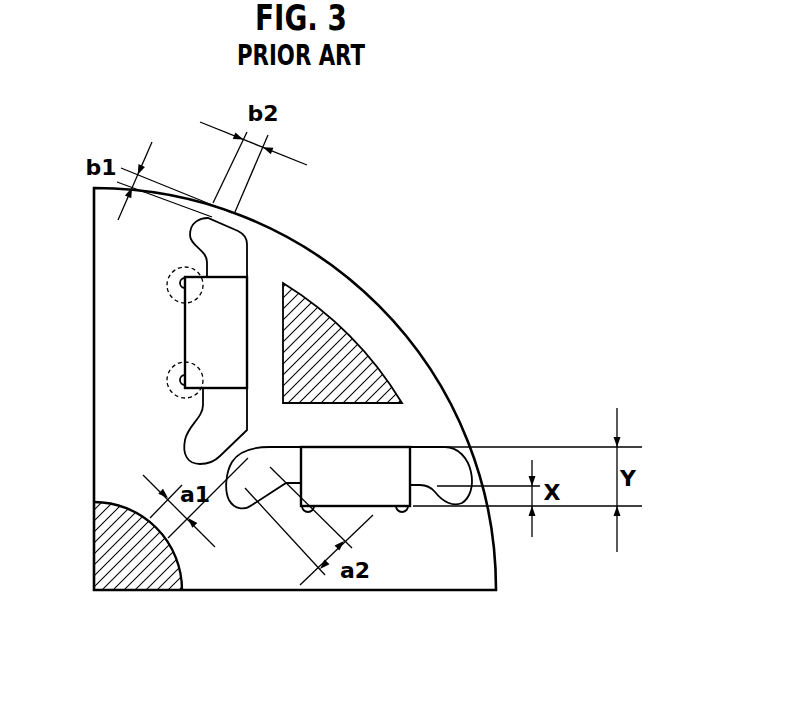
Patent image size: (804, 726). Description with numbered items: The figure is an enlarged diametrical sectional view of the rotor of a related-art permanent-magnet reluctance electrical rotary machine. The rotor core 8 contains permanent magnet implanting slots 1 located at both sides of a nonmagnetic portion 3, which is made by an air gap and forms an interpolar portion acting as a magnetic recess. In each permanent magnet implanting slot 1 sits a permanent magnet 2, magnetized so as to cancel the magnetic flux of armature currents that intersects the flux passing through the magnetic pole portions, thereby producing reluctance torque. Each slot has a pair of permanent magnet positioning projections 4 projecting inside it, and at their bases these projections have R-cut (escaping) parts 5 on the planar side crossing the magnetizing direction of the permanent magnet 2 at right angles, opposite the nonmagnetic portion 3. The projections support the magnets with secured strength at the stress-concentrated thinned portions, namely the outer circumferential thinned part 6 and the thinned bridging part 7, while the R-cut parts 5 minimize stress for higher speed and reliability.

The permanent magnet implanting slot 1 is at (432, 458).
The permanent magnet 2 is at (387, 457).
The nonmagnetic portion 3 is at (351, 352).
The permanent magnet positioning projection 4 is at (247, 248).
The R-cut (escaping) part 5 is at (170, 279).
The outer circumferential thinned part 6 is at (223, 215).
The thinned bridging part 7 is at (230, 463).
The rotor core 8 is at (418, 563).